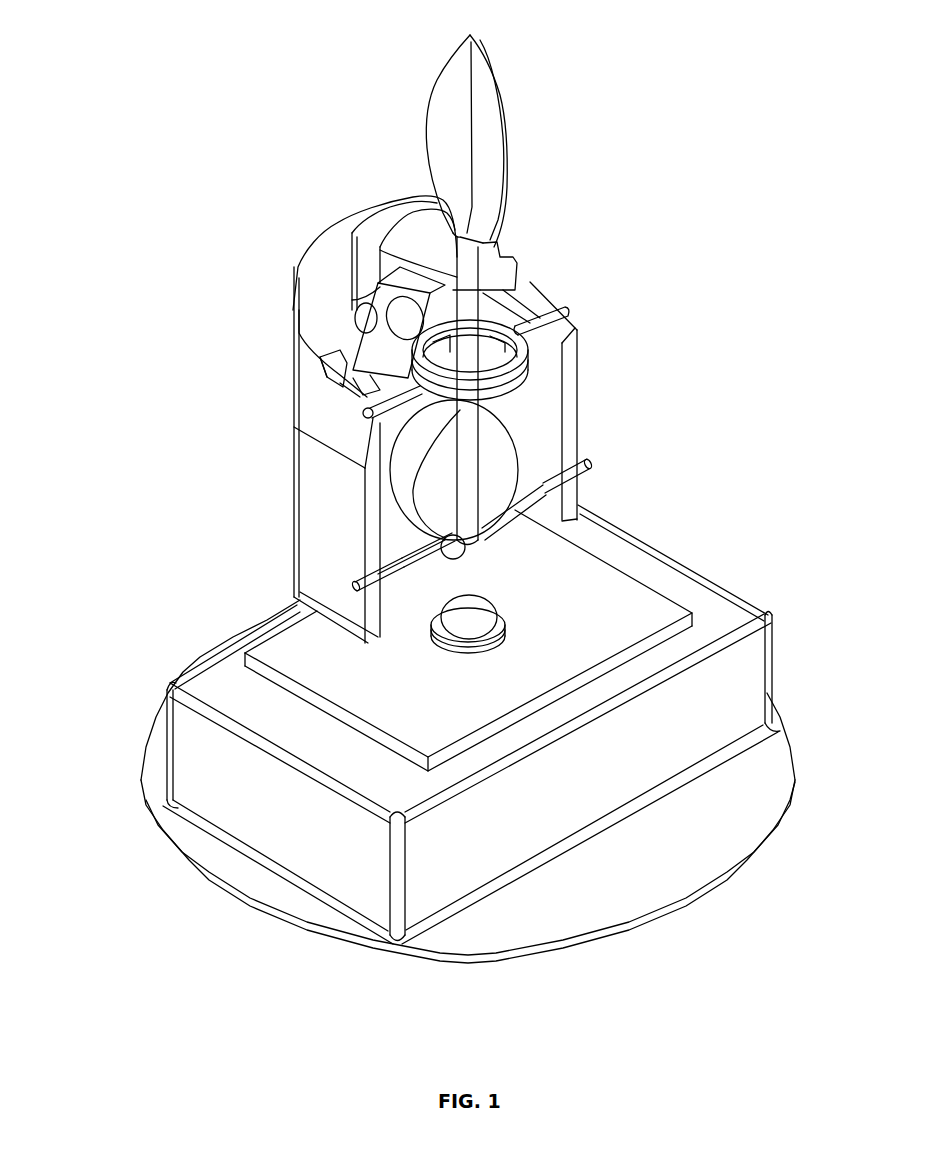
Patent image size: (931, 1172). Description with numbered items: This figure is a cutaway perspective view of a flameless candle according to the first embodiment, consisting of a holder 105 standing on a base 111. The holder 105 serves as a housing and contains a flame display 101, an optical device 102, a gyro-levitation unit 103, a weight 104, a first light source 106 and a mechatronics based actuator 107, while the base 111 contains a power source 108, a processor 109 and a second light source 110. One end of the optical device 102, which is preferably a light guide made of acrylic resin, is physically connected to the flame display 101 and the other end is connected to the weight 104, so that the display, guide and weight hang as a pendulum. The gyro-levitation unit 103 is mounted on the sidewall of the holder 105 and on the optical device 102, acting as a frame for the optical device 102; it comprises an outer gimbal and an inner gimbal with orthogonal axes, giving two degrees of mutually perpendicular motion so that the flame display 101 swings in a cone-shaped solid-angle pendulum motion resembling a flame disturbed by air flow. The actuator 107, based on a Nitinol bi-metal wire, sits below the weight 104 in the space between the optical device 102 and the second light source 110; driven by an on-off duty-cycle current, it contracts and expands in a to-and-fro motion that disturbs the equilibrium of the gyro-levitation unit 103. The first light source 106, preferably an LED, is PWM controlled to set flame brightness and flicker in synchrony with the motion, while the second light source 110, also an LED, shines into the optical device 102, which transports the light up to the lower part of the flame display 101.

The flame display 101 is at (483, 152).
The optical device 102 is at (470, 307).
The gyro-levitation unit 103 is at (532, 367).
The weight 104 is at (497, 452).
The holder 105 is at (332, 272).
The first light source 106 is at (400, 343).
The mechatronics based actuator 107 is at (537, 499).
The power source 108 is at (608, 688).
The processor 109 is at (537, 653).
The second light source 110 is at (470, 618).
The base 111 is at (210, 668).